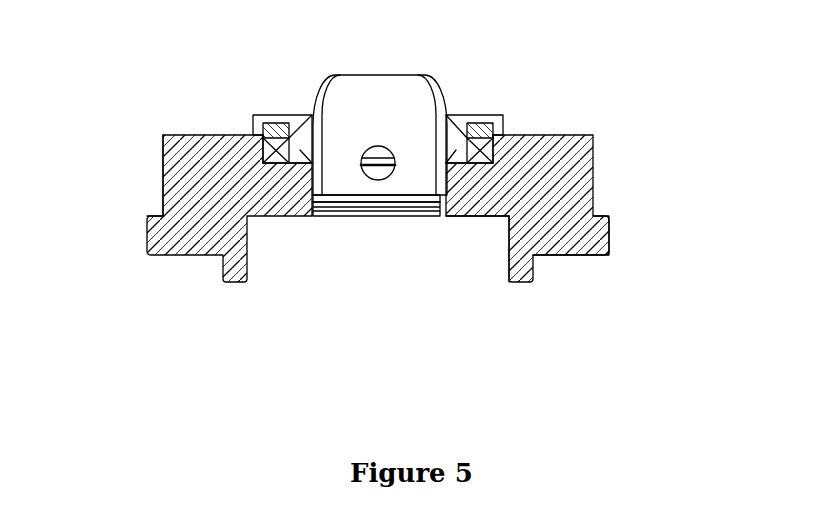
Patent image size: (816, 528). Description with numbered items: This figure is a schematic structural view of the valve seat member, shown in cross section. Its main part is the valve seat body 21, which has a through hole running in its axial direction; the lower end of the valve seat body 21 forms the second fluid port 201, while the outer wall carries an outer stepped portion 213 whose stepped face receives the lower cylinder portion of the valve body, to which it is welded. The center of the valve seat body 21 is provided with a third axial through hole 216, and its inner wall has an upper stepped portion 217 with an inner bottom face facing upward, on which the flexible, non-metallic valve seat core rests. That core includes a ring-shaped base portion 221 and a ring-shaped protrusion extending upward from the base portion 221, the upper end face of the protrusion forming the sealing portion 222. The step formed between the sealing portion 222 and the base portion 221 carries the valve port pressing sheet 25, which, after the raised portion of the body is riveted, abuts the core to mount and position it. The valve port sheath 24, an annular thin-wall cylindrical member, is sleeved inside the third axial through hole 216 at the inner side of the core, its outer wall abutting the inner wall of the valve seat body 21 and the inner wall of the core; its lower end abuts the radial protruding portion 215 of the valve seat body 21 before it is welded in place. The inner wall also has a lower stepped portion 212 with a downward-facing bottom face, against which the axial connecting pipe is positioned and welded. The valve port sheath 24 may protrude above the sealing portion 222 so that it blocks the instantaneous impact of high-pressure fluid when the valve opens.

The second fluid port 201 is at (290, 273).
The outer stepped portion 213 is at (152, 214).
The sealing portion 222 is at (302, 117).
The valve port pressing sheet 25 is at (265, 117).
The valve seat body 21 is at (553, 225).
The valve port sheath 24 is at (506, 226).
The lower stepped portion 212 is at (486, 219).
The base portion 221 is at (499, 145).
The upper stepped portion 217 is at (474, 152).
The third axial through hole 216 is at (318, 200).
The radial protruding portion 215 is at (320, 213).